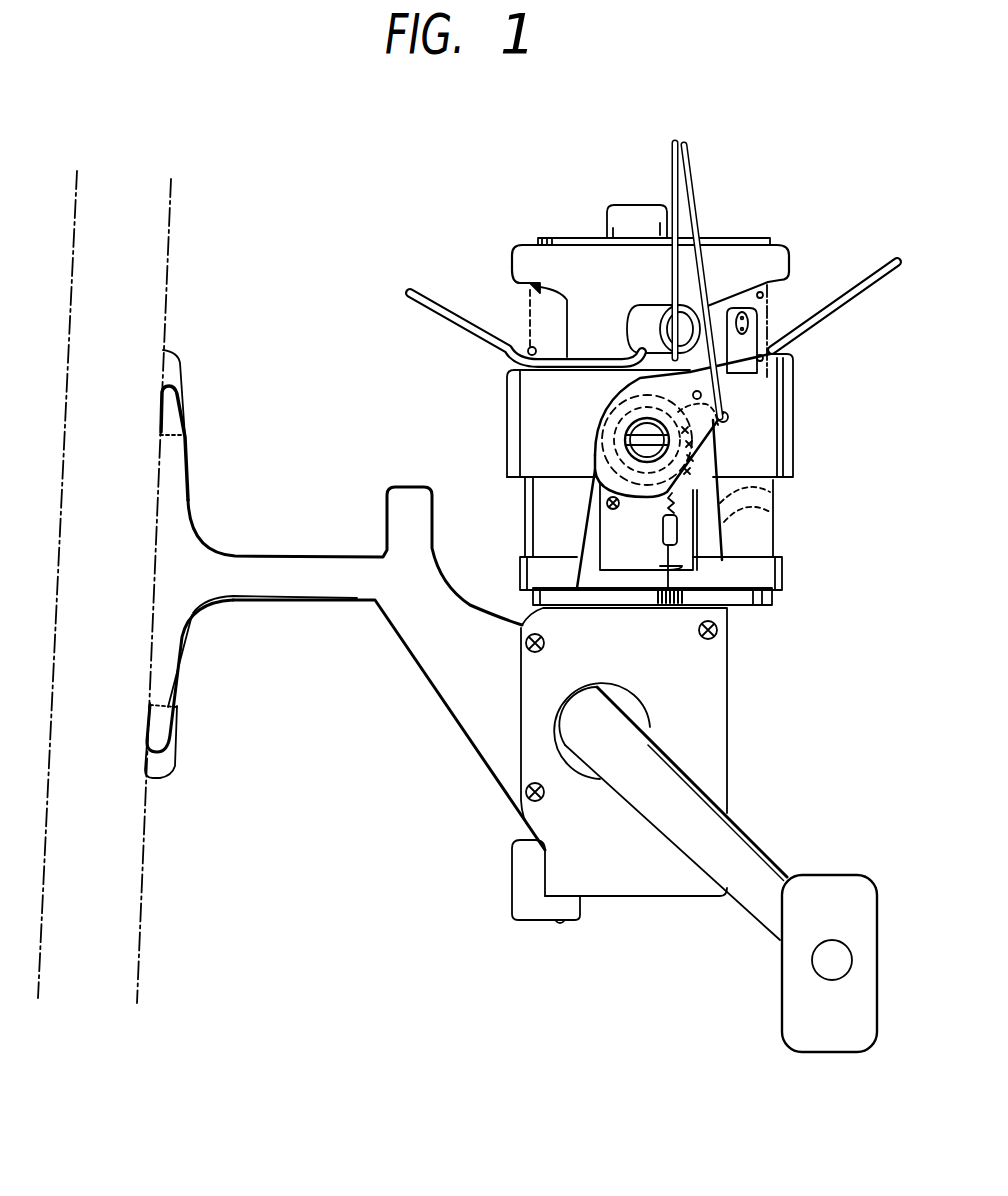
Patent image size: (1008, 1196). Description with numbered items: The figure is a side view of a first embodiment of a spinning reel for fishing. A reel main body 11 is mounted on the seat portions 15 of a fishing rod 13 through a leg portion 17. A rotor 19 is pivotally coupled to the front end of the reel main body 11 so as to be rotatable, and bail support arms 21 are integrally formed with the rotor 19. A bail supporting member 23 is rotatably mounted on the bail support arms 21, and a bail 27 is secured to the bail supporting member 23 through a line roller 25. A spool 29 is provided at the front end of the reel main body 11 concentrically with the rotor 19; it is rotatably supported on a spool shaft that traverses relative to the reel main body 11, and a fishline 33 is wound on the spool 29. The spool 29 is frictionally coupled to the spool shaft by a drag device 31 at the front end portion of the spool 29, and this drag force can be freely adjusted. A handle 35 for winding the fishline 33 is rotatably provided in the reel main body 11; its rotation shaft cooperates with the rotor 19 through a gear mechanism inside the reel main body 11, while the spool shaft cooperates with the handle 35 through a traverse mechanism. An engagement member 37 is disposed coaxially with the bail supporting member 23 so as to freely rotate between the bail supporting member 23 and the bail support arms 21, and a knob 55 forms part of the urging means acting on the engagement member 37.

The reel main body 11 is at (730, 703).
The fishing rod 13 is at (140, 258).
The seat portions 15 is at (172, 368).
The leg portion 17 is at (269, 581).
The rotor 19 is at (765, 550).
The bail support arms 21 is at (585, 527).
The bail supporting member 23 is at (720, 423).
The line roller 25 is at (692, 308).
The bail 27 is at (415, 292).
The spool 29 is at (537, 257).
The drag device 31 is at (568, 238).
The fishline 33 is at (527, 350).
The handle 35 is at (730, 845).
The engagement member 37 is at (600, 440).
The knob 55 is at (730, 607).